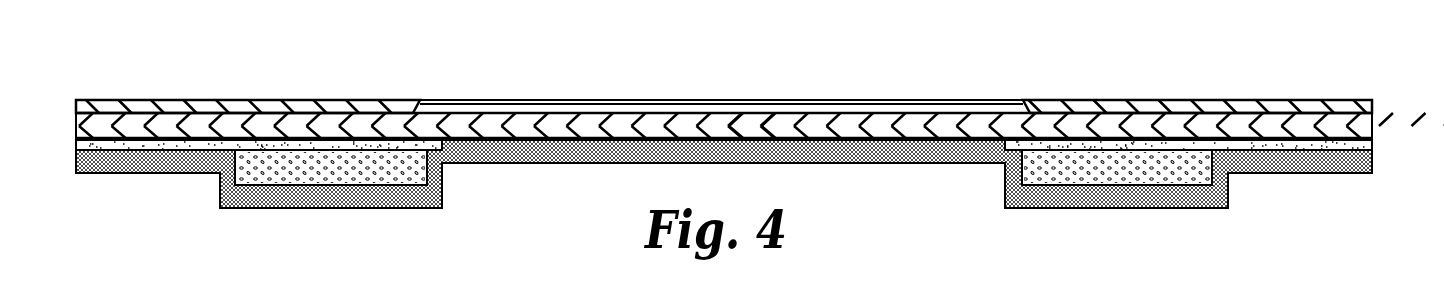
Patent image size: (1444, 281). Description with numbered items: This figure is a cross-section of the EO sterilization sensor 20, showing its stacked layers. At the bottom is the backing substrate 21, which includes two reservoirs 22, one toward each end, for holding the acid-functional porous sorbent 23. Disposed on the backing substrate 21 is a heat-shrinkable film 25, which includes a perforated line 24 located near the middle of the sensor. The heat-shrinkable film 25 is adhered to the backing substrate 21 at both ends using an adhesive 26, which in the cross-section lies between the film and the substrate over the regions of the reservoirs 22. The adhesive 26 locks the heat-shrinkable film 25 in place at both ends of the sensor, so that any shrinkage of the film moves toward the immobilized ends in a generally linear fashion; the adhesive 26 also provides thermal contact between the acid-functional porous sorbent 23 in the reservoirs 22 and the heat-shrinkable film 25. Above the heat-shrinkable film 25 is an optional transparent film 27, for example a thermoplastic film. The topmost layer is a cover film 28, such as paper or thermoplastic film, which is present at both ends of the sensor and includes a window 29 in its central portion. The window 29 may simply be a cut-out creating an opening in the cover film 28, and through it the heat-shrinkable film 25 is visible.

The EO sterilization sensor 20 is at (1341, 43).
The backing substrate 21 is at (950, 160).
The reservoirs 22 is at (362, 187).
The acid-functional porous sorbent 23 is at (290, 177).
The perforated line 24 is at (742, 130).
The heat-shrinkable film 25 is at (843, 135).
The adhesive 26 is at (142, 147).
The transparent film 27 is at (652, 118).
The cover film 28 is at (305, 108).
The window 29 is at (490, 106).